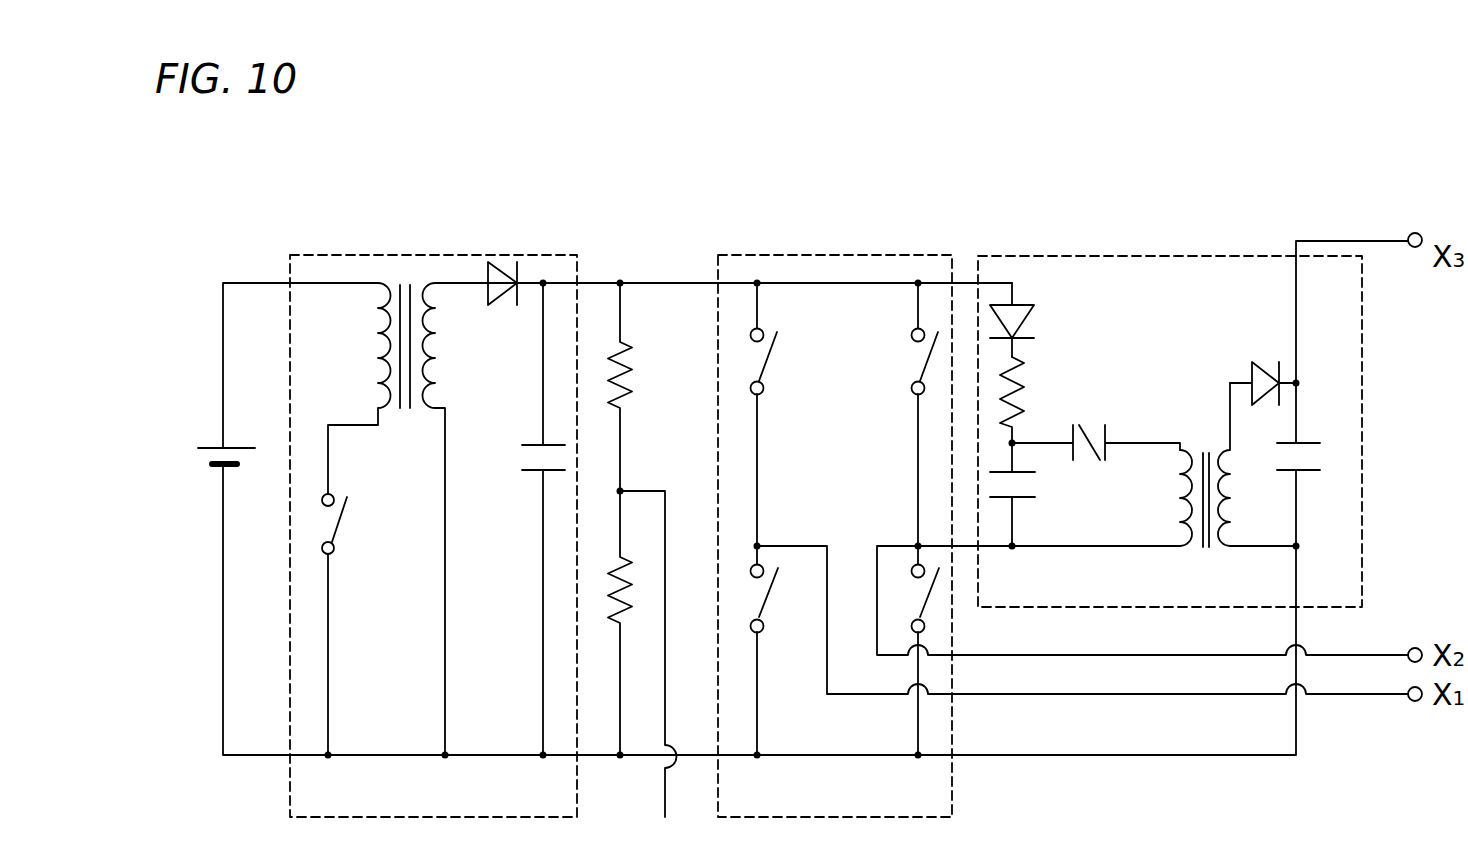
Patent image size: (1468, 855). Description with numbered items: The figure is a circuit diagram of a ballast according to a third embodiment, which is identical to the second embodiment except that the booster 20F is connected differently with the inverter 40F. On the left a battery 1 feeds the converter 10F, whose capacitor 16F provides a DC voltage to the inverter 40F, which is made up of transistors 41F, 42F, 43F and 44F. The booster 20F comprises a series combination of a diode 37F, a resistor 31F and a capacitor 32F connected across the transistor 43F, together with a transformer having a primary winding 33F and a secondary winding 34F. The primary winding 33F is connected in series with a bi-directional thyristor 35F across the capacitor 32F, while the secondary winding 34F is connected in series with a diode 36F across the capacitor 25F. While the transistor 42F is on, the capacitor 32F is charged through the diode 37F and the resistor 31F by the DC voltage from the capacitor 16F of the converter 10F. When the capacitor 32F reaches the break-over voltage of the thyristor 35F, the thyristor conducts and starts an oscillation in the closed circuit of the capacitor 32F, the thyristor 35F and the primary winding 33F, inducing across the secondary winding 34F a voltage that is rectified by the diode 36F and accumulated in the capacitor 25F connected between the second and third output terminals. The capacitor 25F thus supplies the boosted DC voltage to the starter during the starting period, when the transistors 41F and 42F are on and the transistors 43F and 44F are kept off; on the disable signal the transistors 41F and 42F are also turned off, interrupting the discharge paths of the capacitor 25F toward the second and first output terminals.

The battery 1 is at (202, 467).
The converter 10F is at (450, 255).
The capacitor 16F is at (522, 460).
The booster 20F is at (1127, 255).
The capacitor 25F is at (1320, 460).
The resistor 31F is at (1032, 387).
The capacitor 32F is at (1038, 485).
The primary winding 33F is at (1178, 495).
The secondary winding 34F is at (1235, 485).
The bi-directional thyristor 35F is at (1088, 417).
The diode 36F is at (1263, 360).
The diode 37F is at (1043, 320).
The inverter 40F is at (798, 255).
The transistor 41F is at (780, 367).
The transistor 42F is at (905, 603).
The transistor 43F is at (902, 363).
The transistor 44F is at (777, 600).